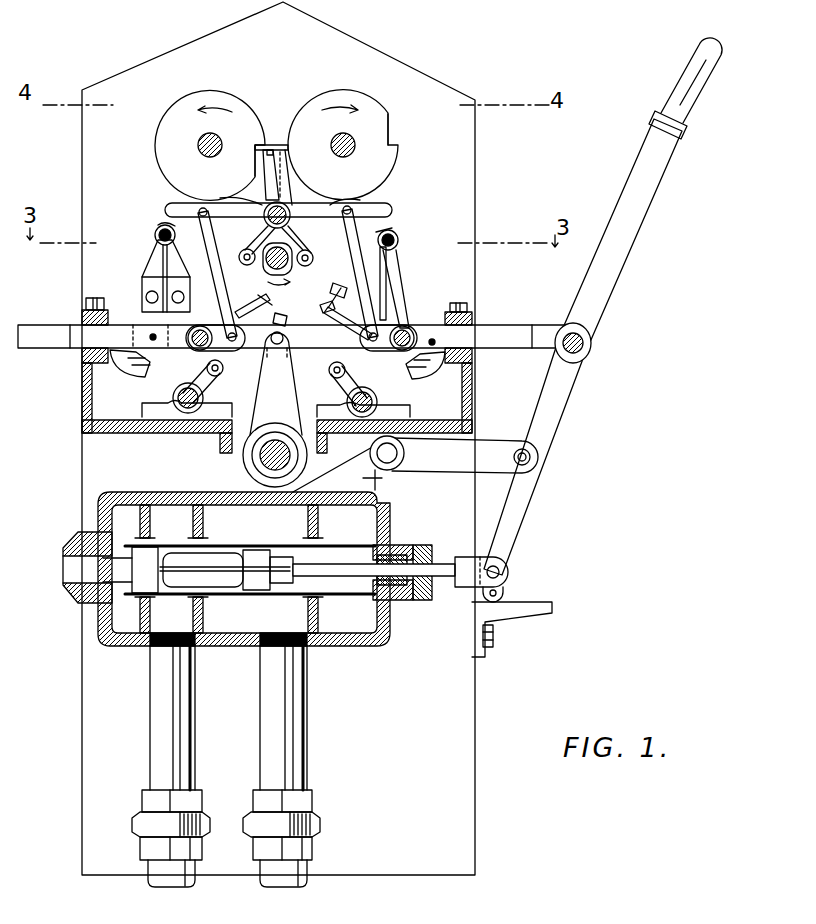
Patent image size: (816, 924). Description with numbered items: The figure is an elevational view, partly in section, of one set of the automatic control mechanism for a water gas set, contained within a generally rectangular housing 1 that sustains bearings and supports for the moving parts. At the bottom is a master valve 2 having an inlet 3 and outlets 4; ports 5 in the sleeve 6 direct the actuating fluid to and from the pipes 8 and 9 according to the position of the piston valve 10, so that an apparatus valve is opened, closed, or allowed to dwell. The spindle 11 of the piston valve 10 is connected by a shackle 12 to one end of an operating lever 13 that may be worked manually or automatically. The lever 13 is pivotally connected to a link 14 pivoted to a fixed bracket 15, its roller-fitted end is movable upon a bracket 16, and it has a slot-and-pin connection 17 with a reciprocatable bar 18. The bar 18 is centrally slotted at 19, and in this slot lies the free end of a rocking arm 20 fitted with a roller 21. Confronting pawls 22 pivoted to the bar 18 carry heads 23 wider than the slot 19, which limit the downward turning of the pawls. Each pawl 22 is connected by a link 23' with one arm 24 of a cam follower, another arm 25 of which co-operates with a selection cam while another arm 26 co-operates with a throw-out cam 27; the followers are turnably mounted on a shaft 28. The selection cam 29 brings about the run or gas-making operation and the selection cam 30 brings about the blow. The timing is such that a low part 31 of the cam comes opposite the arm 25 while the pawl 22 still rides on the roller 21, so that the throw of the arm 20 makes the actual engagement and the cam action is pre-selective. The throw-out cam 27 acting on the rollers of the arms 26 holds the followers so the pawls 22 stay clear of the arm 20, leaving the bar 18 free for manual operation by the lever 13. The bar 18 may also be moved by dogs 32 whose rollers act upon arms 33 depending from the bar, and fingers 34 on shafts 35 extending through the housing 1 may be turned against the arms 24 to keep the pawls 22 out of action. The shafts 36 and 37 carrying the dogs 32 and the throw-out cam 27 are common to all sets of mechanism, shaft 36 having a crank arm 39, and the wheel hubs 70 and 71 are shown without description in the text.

The housing 1 is at (372, 48).
The master valve 2 is at (98, 497).
The inlet 3 is at (228, 600).
The outlets 4 is at (127, 622).
The ports 5 is at (187, 546).
The sleeve 6 is at (330, 588).
The pipe 8 is at (196, 758).
The pipe 9 is at (308, 758).
The piston valve 10 is at (140, 575).
The spindle 11 is at (385, 570).
The shackle 12 is at (508, 568).
The operating lever 13 is at (634, 246).
The link 14 is at (490, 445).
The fixed bracket 15 is at (383, 476).
The bracket 16 is at (517, 626).
The slot-and-pin connection 17 is at (592, 346).
The reciprocatable bar 18 is at (497, 328).
The slot 19 is at (318, 347).
The rocking arm 20 is at (287, 386).
The roller 21 is at (257, 345).
The pawls 22 is at (266, 346).
The heads 23 is at (309, 286).
The link 23' is at (263, 280).
The arm of cam follower 24 is at (190, 203).
The arm of cam follower 25 is at (265, 145).
The arm of cam follower 26 is at (257, 265).
The throw-out cam 27 is at (266, 286).
The shaft 28 is at (291, 213).
The selection cam 29 is at (215, 92).
The selection cam 30 is at (345, 92).
The low part of cam 31 is at (255, 156).
The dogs 32 is at (201, 365).
The arms 33 is at (140, 368).
The fingers 34 is at (172, 226).
The shafts 35 is at (156, 237).
The shaft 36 is at (176, 397).
The shaft 37 is at (378, 401).
The crank arm 39 is at (247, 250).
The shaft 70 is at (198, 150).
The shaft 71 is at (349, 152).